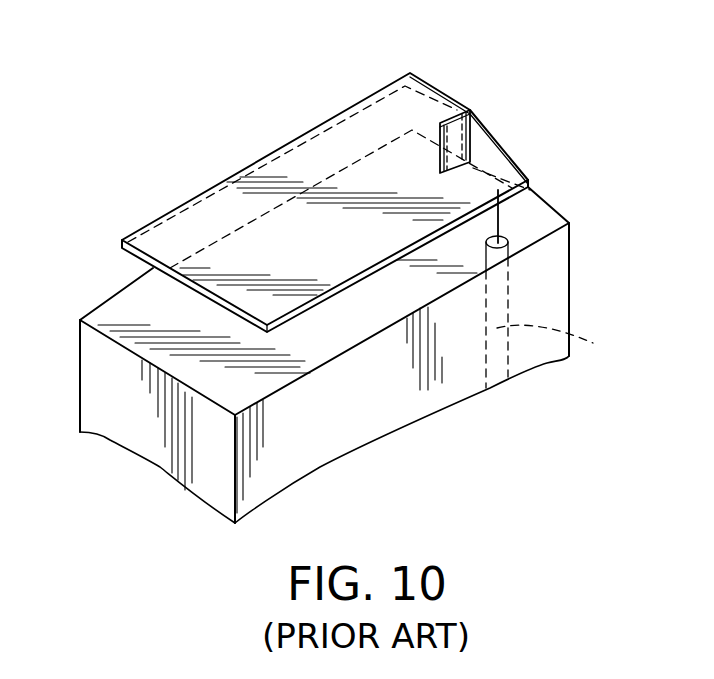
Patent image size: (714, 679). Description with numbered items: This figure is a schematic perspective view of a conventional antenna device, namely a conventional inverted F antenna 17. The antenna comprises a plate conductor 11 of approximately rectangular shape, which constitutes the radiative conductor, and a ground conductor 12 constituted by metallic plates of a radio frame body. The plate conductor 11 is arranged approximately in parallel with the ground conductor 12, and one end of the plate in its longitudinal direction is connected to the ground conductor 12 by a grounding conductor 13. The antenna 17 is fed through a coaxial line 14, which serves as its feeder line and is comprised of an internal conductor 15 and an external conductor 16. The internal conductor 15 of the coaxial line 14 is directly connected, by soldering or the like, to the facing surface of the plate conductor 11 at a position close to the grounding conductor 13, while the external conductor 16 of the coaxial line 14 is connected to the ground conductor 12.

The plate conductor 11 is at (313, 157).
The ground conductor 12 is at (540, 223).
The grounding conductor 13 is at (443, 91).
The coaxial line 14 is at (563, 345).
The internal conductor 15 is at (500, 218).
The external conductor 16 is at (517, 237).
The inverted F antenna 17 is at (326, 172).